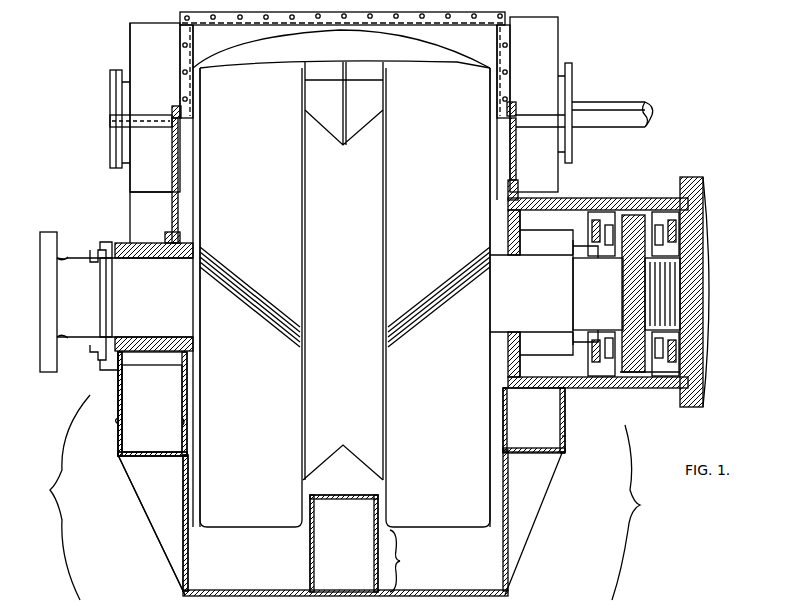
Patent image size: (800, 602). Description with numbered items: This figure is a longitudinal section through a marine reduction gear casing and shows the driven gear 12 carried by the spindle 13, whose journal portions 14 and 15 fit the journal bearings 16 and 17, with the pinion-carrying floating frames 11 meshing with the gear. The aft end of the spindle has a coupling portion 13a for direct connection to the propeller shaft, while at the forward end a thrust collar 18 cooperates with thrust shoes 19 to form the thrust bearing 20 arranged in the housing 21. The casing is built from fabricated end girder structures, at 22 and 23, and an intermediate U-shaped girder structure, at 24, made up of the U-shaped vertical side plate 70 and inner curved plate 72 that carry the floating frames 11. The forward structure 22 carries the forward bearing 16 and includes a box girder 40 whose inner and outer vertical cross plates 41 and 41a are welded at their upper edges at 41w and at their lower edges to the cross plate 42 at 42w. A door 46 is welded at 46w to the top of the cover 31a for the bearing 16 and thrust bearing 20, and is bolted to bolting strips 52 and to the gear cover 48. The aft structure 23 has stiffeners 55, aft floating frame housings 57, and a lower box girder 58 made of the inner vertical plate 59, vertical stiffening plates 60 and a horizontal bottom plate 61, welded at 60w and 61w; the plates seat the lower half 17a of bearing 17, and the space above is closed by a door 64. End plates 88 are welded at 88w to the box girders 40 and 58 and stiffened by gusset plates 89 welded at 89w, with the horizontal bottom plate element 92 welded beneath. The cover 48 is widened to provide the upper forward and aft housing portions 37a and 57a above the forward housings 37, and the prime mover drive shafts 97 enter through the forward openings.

The floating frames 11 is at (447, 55).
The driven gear 12 is at (307, 398).
The spindle 13 is at (68, 270).
The coupling portion 13a is at (45, 345).
The journal portion 14 is at (538, 291).
The journal portion 15 is at (160, 291).
The journal bearing 16 is at (560, 258).
The journal bearing 17 is at (118, 255).
The lower half of bearing 17a is at (130, 352).
The thrust collar 18 is at (637, 225).
The thrust shoes 19 is at (612, 210).
The thrust bearing 20 is at (644, 291).
The housing 21 is at (625, 376).
The forward end beam or girder structure 22 is at (637, 512).
The aft end beam or girder structure 23 is at (59, 497).
The intermediate U-shaped beam or girder structure 24 is at (406, 561).
The cover 31a is at (558, 200).
The housings 37 is at (550, 147).
The upper forward portion of housing 37a is at (545, 46).
The box girder 40 is at (541, 427).
The inner vertical cross plate 41 is at (503, 438).
The outer vertical cross plate 41a is at (566, 441).
The weld 41w is at (505, 410).
The cross plate 42 is at (532, 454).
The weld 42w is at (565, 451).
The door 46 is at (512, 146).
The weld 46w is at (512, 182).
The gear cover 48 is at (510, 13).
The bolting strips 52 is at (512, 100).
The stiffeners 55 is at (130, 222).
The aft floating frame housings 57 is at (138, 162).
The upper aft portion of housing 57a is at (138, 50).
The lower box girder 58 is at (163, 412).
The inner vertical plate 59 is at (120, 432).
The vertical stiffening plates 60 is at (166, 388).
The weld 60w is at (170, 378).
The horizontal bottom plate 61 is at (148, 440).
The weld 61w is at (118, 456).
The door 64 is at (172, 175).
The U-shaped vertical side plate 70 is at (374, 545).
The inner curved plate 72 is at (343, 500).
The end plates 88 is at (188, 548).
The weld 88w is at (184, 457).
The gusset plates 89 is at (162, 547).
The weld 89w is at (183, 515).
The horizontal bottom plate element 92 is at (238, 590).
The prime mover drive shafts 97 is at (625, 105).